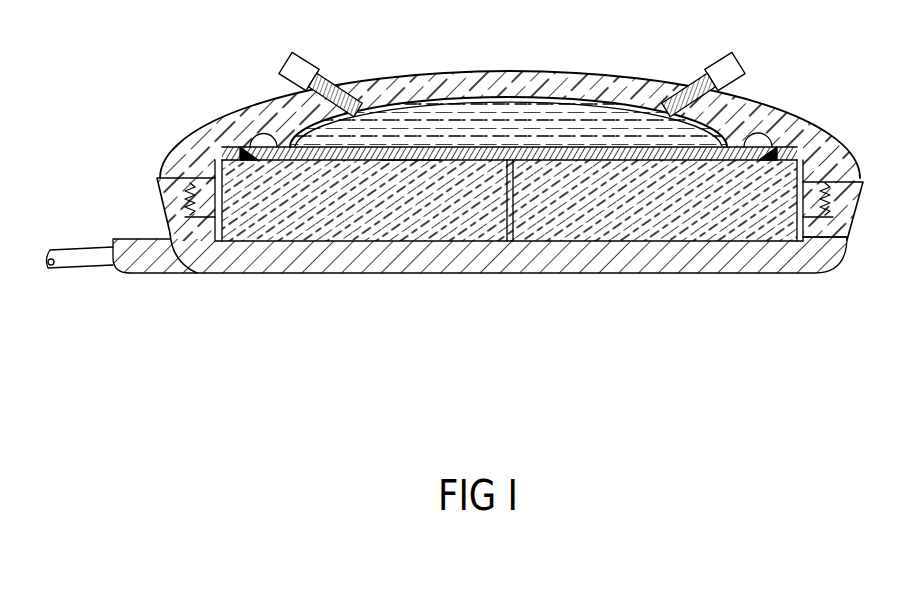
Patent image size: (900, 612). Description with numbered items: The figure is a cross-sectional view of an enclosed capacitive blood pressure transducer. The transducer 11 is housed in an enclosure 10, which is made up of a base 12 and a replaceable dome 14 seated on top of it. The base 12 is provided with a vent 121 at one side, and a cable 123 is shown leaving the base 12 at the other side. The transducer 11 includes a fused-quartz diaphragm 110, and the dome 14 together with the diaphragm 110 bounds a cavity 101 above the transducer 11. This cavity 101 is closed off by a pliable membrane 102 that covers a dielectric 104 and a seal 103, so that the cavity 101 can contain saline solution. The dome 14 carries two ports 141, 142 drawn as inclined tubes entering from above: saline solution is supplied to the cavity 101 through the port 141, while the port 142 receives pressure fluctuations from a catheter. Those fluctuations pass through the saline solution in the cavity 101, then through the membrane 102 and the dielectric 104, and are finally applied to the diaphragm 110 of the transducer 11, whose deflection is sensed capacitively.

The enclosure 10 is at (647, 273).
The transducer 11 is at (357, 216).
The base 12 is at (203, 273).
The replaceable dome 14 is at (770, 108).
The cavity 101 is at (593, 127).
The pliable membrane 102 is at (483, 148).
The seal 103 is at (383, 120).
The dielectric 104 is at (243, 152).
The diaphragm 110 is at (410, 162).
The vent 121 is at (820, 240).
The cable 123 is at (73, 270).
The port 141 is at (745, 62).
The port 142 is at (279, 62).